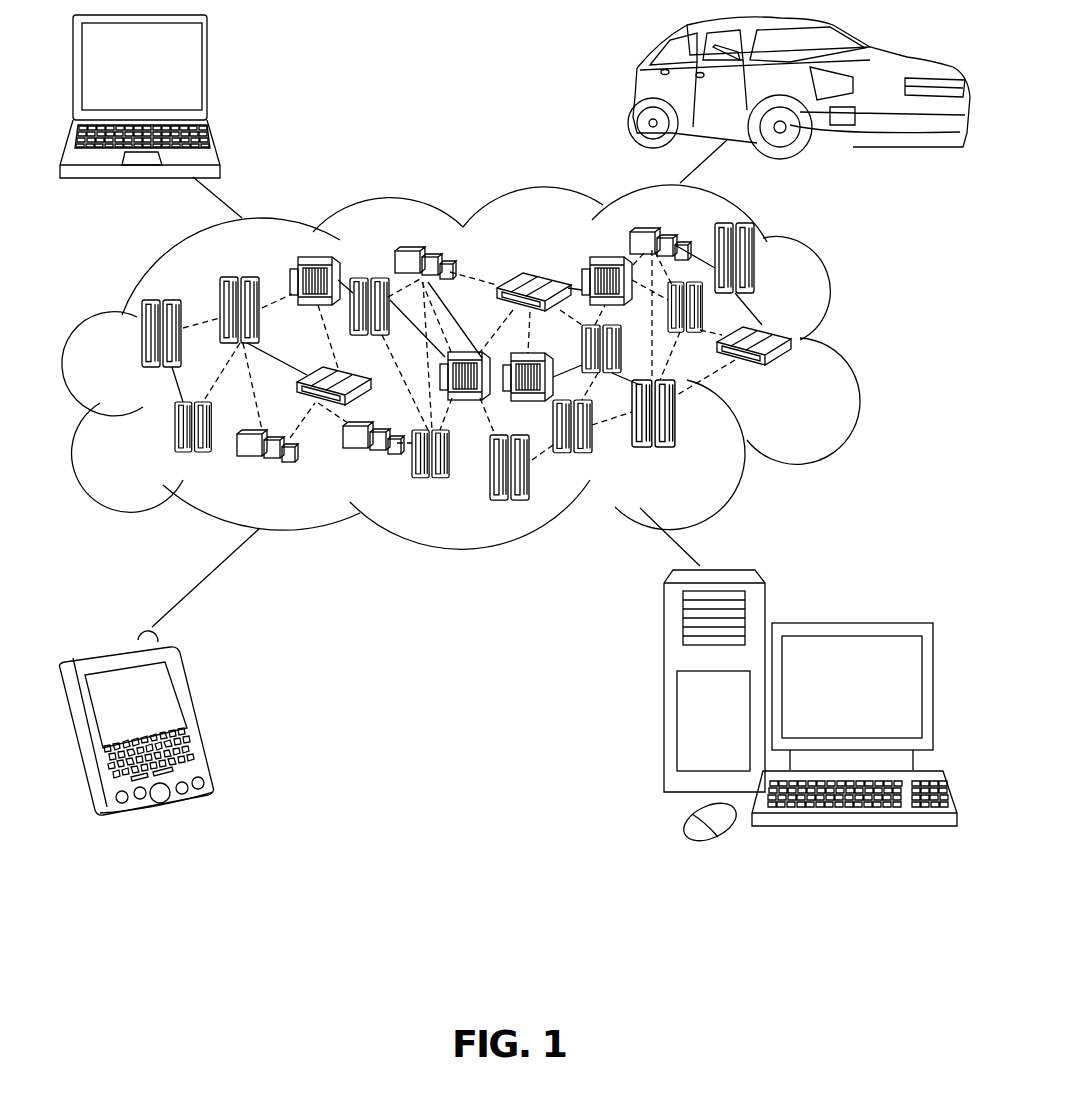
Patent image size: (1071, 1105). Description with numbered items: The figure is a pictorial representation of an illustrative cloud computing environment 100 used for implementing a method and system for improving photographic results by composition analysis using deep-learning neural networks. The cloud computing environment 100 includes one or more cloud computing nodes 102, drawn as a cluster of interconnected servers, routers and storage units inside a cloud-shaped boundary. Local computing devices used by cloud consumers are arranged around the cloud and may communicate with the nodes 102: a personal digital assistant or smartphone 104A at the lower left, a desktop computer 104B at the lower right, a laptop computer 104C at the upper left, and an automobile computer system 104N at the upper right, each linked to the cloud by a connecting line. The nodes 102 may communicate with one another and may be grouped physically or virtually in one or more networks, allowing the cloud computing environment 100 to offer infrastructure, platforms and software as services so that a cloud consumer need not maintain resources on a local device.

The cloud computing environment 100 is at (847, 346).
The cloud computing nodes 102 is at (793, 372).
The personal digital assistant (PDA) or smartphone 104A is at (200, 719).
The desktop computer 104B is at (850, 623).
The laptop computer 104C is at (208, 77).
The automobile computer system 104N is at (638, 93).